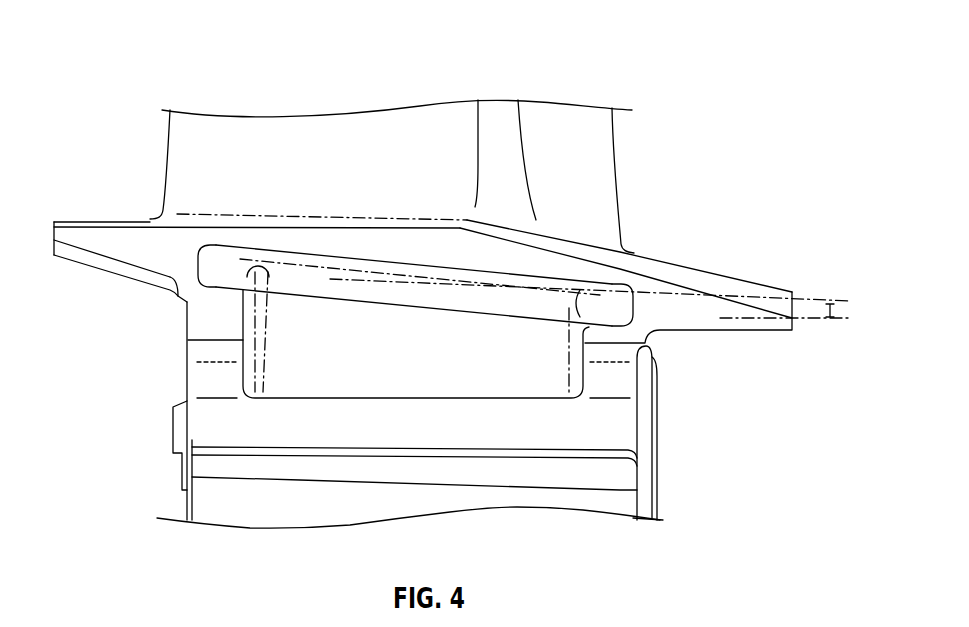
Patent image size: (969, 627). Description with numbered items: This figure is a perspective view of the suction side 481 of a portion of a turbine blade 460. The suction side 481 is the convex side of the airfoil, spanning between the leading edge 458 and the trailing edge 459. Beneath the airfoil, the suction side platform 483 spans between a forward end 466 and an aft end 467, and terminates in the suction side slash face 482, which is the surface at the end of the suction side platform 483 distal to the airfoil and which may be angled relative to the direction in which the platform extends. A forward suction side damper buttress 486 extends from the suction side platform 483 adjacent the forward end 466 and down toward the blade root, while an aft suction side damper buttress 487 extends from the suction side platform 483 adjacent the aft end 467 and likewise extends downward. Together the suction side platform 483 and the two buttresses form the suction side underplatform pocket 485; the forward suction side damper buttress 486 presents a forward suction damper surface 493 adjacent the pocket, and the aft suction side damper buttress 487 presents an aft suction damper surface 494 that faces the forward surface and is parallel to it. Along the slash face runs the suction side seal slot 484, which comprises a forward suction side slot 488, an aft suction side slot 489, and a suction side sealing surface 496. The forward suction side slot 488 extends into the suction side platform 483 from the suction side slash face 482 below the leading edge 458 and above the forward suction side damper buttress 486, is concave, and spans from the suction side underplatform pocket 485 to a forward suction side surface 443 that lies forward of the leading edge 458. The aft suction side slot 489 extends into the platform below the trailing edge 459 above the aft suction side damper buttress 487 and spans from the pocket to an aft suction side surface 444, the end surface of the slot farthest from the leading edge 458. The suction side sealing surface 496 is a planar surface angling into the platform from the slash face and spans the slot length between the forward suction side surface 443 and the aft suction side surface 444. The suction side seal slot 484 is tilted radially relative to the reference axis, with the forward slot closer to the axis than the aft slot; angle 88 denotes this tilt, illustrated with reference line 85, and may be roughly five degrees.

The turbine blade 460 is at (697, 37).
The leading edge 458 is at (622, 203).
The trailing edge 459 is at (165, 168).
The suction side 481 is at (598, 162).
The aft suction side slot 489 is at (221, 263).
The aft end 467 is at (54, 250).
The aft suction side damper buttress 487 is at (207, 333).
The suction side seal slot 484 is at (493, 277).
The suction side sealing surface 496 is at (428, 277).
The aft suction side surface 444 is at (265, 278).
The aft suction damper surface 494 is at (288, 329).
The suction side underplatform pocket 485 is at (395, 383).
The forward suction side surface 443 is at (573, 313).
The forward suction side slot 488 is at (607, 300).
The forward suction damper surface 493 is at (541, 350).
The suction side slash face 482 is at (727, 307).
The suction side platform 483 is at (791, 253).
The forward end 466 is at (795, 315).
The angle 88 is at (827, 311).
The reference line 85 is at (847, 320).
The forward suction side damper buttress 486 is at (600, 338).